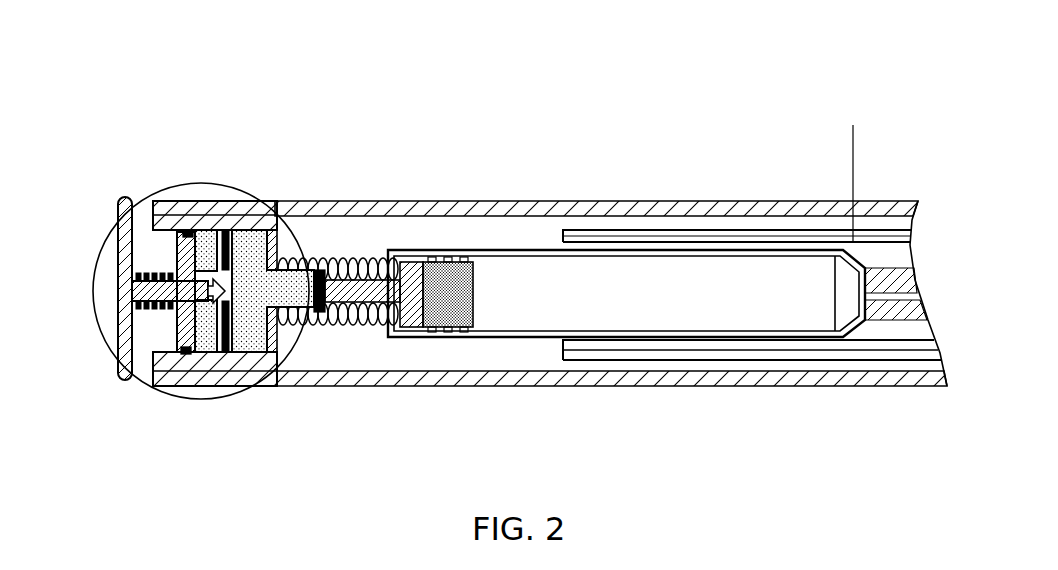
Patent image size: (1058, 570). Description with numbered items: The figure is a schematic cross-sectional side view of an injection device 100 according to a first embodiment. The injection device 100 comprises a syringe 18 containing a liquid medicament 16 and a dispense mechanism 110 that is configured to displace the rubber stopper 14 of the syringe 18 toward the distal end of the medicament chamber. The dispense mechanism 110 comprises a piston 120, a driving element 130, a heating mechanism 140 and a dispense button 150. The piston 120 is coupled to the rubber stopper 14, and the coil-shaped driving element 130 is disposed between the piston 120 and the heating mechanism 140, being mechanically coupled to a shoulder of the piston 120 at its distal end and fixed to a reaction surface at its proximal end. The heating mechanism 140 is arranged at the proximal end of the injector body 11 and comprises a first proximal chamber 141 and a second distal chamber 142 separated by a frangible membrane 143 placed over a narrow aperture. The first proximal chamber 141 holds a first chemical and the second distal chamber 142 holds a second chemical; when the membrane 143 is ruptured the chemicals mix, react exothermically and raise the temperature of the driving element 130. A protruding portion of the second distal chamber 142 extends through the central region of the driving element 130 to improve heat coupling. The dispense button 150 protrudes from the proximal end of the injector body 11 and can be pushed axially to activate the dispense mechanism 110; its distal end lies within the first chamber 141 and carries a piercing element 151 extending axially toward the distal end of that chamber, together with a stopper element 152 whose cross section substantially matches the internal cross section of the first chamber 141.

The injection device 100 is at (634, 121).
The injector body 11 is at (888, 203).
The rubber stopper 14 is at (452, 285).
The liquid medicament 16 is at (682, 285).
The syringe 18 is at (728, 250).
The dispense mechanism 110 is at (297, 343).
The piston 120 is at (413, 262).
The driving element 130 is at (355, 262).
The heating mechanism 140 is at (252, 322).
The first proximal chamber 141 is at (210, 253).
The second distal chamber 142 is at (249, 250).
The frangible membrane 143 is at (231, 276).
The dispense button 150 is at (130, 283).
The piercing element 151 is at (180, 256).
The stopper element 152 is at (185, 352).